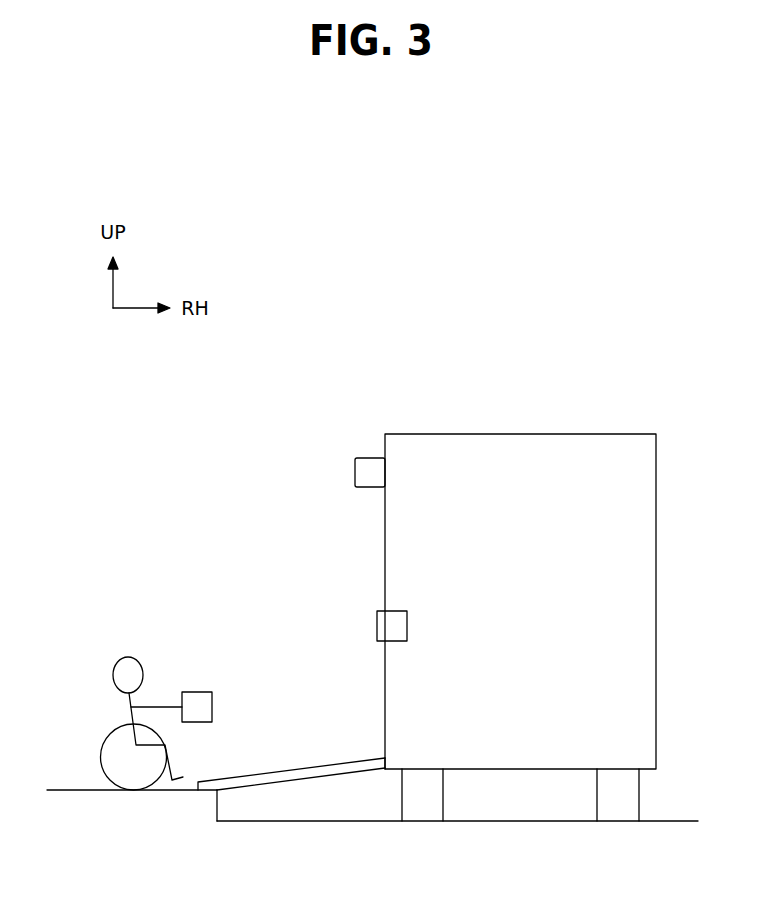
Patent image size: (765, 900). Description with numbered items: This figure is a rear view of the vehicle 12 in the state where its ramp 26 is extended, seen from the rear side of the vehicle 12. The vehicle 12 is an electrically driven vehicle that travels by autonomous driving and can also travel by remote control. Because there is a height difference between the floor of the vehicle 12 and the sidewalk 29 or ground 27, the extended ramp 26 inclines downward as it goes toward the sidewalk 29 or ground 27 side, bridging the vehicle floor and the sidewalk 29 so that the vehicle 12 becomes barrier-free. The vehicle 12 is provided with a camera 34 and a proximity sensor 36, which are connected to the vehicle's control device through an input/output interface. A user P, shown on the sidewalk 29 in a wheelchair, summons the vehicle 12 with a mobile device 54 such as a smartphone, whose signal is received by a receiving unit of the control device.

The vehicle 12 is at (630, 396).
The ramp 26 is at (326, 768).
The ground 27 is at (293, 822).
The sidewalk 29 is at (82, 789).
The camera 34 is at (363, 467).
The proximity sensor 36 is at (393, 623).
The mobile device 54 is at (197, 700).
The user P is at (129, 668).